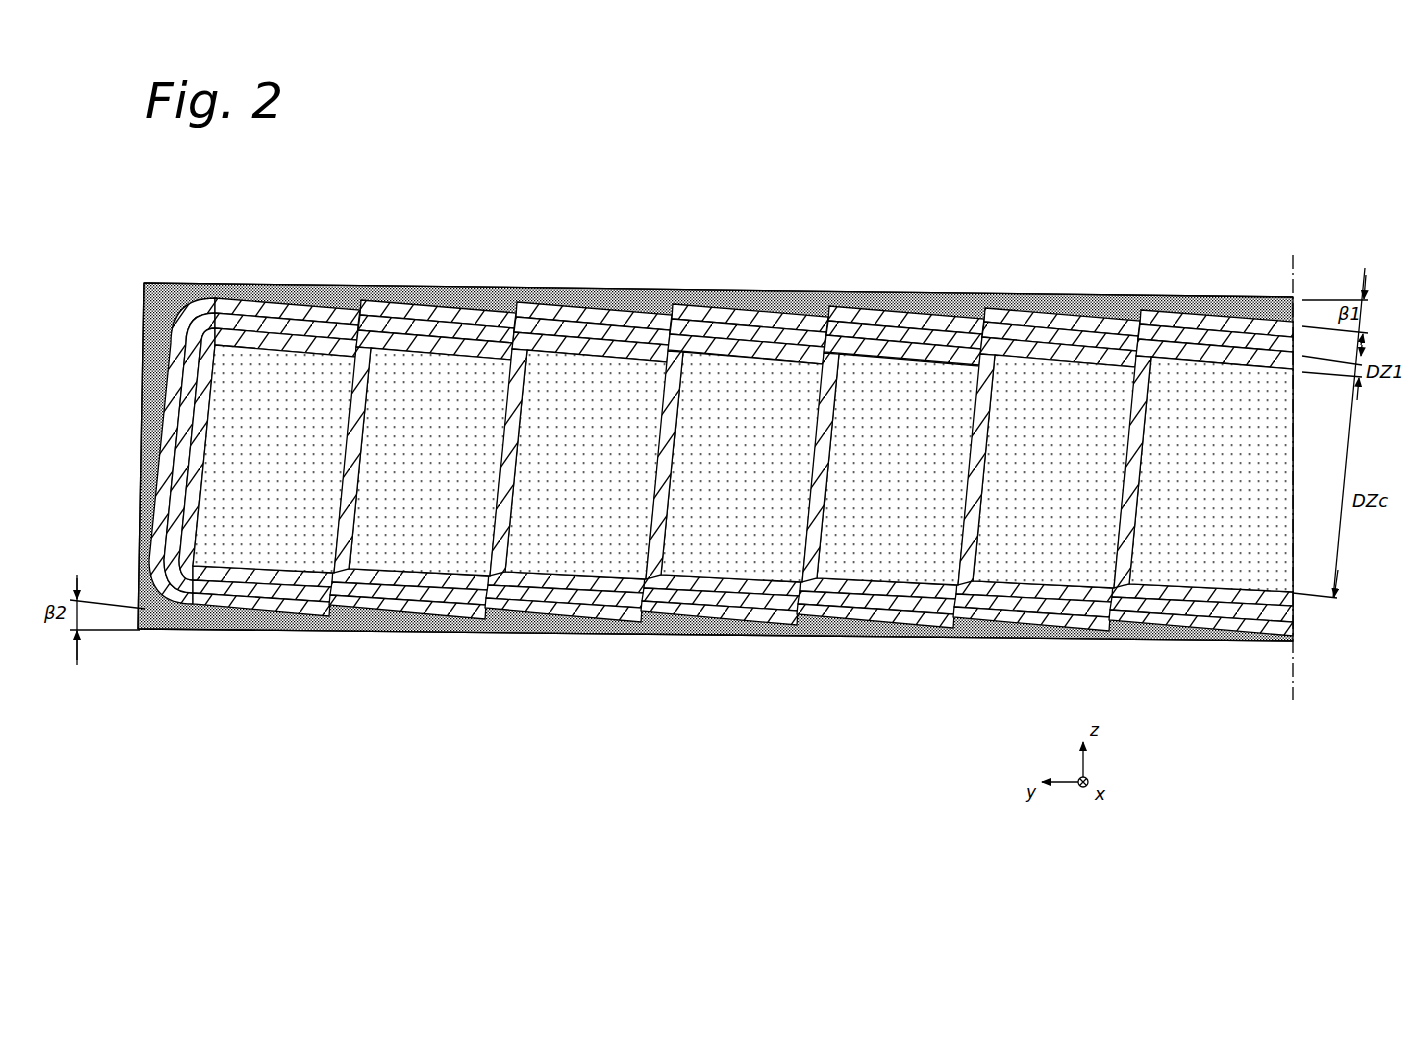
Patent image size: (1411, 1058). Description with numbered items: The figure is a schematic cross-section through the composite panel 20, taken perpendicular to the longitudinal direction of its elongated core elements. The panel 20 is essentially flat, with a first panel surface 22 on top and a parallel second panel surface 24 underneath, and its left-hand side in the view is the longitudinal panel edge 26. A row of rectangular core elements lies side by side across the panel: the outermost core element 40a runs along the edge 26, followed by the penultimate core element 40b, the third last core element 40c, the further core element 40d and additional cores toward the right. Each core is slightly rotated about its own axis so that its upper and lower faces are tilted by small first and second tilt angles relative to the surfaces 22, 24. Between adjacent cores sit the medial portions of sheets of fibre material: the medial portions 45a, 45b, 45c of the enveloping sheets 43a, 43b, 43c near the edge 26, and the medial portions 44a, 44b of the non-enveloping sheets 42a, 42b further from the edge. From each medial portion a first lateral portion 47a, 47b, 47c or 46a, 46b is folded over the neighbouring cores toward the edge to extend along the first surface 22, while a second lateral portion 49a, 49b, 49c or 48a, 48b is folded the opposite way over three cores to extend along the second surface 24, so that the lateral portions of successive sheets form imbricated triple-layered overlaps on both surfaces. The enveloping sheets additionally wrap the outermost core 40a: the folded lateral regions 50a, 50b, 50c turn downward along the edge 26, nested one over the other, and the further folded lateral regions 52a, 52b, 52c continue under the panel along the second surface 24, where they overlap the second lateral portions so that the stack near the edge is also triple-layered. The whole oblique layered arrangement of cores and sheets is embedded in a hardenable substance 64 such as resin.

The panel 20 is at (115, 290).
The first panel surface 22 is at (283, 279).
The second panel surface 24 is at (955, 661).
The first panel edge (longitudinal edge) 26 is at (137, 571).
The outermost core element 40a is at (247, 496).
The penultimate core element 40b is at (418, 491).
The third last core element 40c is at (565, 501).
The further core element 40d is at (740, 479).
The non-enveloping sheet 42a is at (750, 336).
The non-enveloping sheet 42b is at (890, 339).
The outermost sheet 43a is at (297, 331).
The penultimate sheet 43b is at (472, 335).
The third last enveloping sheet 43c is at (600, 340).
The medial portion of non-enveloping sheet 44a is at (821, 428).
The medial portion of non-enveloping sheet 44b is at (977, 428).
The medial portion of outermost sheet 45a is at (354, 412).
The medial portion of penultimate sheet 45b is at (511, 412).
The medial portion of enveloping sheet 45c is at (667, 414).
The first lateral portion of non-enveloping sheet 46a is at (710, 346).
The first lateral portion of non-enveloping sheet 46b is at (880, 346).
The first lateral portion of outermost sheet 47a is at (262, 331).
The first lateral portion of penultimate sheet 47b is at (418, 333).
The first lateral portion of third last sheet 47c is at (553, 336).
The second lateral portion of non-enveloping sheet 48a is at (1185, 621).
The second lateral portion of non-enveloping sheet 48b is at (1235, 611).
The second lateral portion of outermost sheet 49a is at (790, 616).
The second lateral portion of penultimate sheet 49b is at (905, 616).
The second lateral portion of third last sheet 49c is at (1060, 619).
The folded lateral region of outermost sheet 50a is at (185, 360).
The folded lateral region of penultimate sheet 50b is at (185, 407).
The folded lateral region of third last sheet 50c is at (164, 444).
The further folded lateral region of outermost sheet 52a is at (606, 611).
The further folded lateral region of penultimate sheet 52b is at (450, 606).
The further folded lateral region of third last sheet 52c is at (305, 613).
The hardenable substance 64 is at (1050, 306).